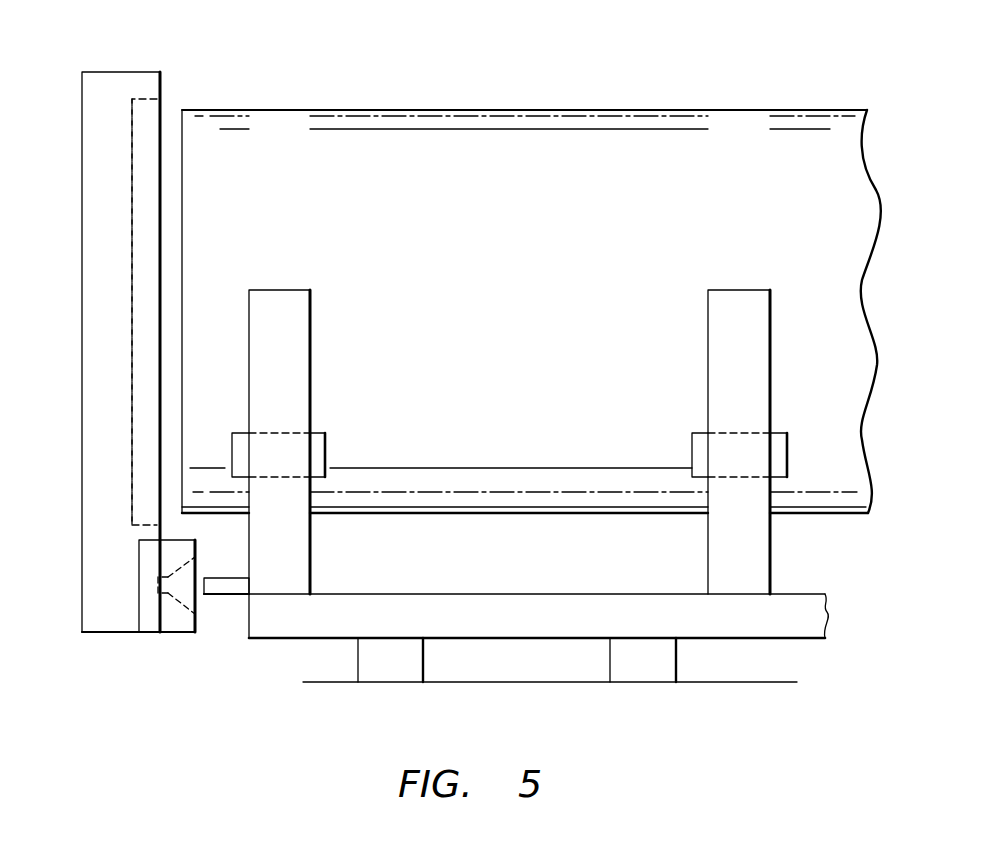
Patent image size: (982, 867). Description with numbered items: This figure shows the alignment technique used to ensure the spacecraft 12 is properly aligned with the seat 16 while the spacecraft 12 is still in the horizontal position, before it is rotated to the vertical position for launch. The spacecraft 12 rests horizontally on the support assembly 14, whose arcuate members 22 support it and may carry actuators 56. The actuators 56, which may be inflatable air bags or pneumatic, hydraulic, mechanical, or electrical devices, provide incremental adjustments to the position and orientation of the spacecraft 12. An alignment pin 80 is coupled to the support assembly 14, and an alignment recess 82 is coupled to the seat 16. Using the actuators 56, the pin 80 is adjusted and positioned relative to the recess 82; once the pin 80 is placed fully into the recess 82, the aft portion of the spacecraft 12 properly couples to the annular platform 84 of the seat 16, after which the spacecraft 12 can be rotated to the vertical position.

The spacecraft 12 is at (523, 109).
The support assembly 14 is at (847, 612).
The seat 16 is at (120, 72).
The arcuate members 22 is at (310, 355).
The actuators 56 is at (325, 455).
The alignment pin 80 is at (229, 595).
The alignment recess 82 is at (167, 633).
The annular platform 84 is at (132, 165).